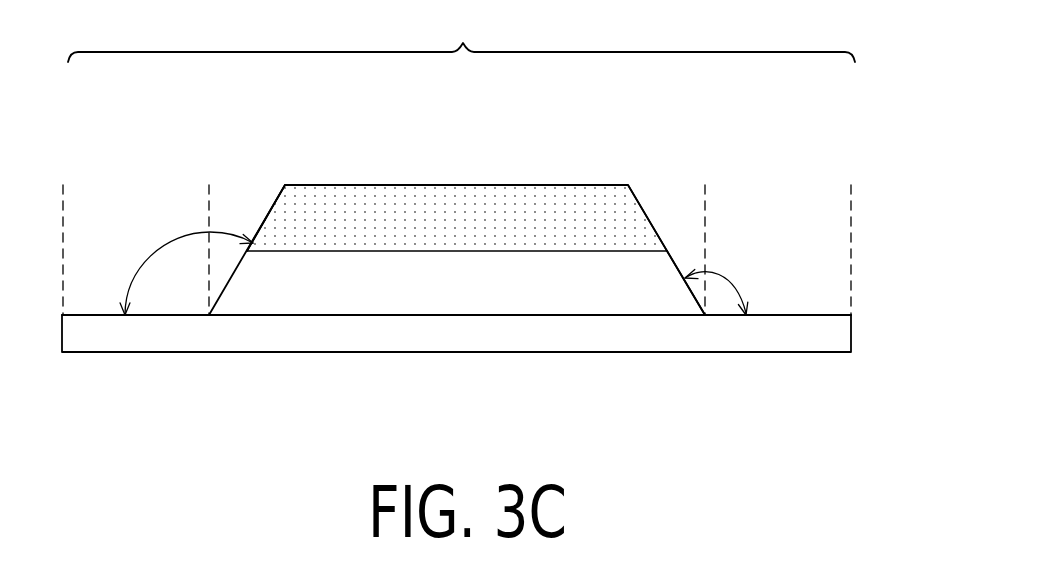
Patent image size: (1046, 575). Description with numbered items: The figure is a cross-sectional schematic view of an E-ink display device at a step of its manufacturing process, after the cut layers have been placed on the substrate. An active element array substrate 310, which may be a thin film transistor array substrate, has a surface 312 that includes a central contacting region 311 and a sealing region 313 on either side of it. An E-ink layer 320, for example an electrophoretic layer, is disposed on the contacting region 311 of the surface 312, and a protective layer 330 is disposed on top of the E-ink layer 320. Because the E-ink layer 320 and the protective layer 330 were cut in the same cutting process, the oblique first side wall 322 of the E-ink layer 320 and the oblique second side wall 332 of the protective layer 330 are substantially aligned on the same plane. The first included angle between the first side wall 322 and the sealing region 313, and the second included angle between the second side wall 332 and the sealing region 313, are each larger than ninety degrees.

The active element array substrate 310 is at (825, 335).
The contacting region 311 is at (457, 313).
The surface 312 is at (461, 32).
The sealing region 313 is at (97, 313).
The E-ink layer 320 is at (600, 288).
The first side wall 322 is at (681, 268).
The protective layer 330 is at (357, 232).
The second side wall 332 is at (260, 224).